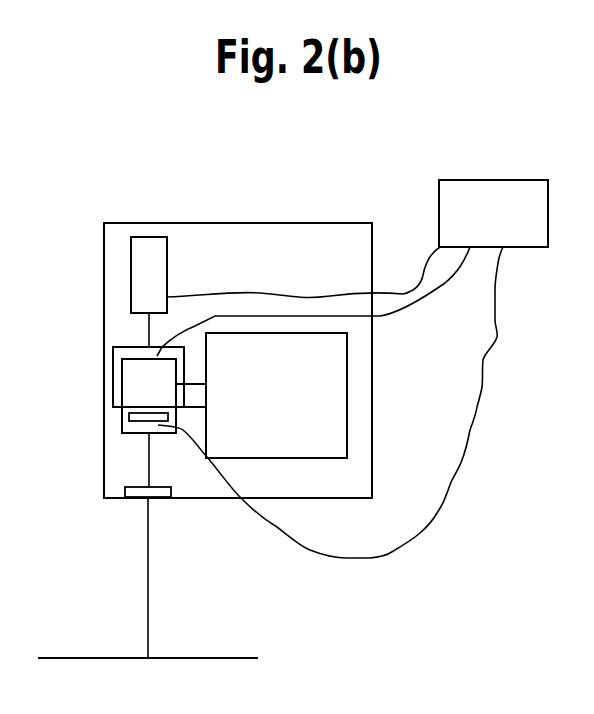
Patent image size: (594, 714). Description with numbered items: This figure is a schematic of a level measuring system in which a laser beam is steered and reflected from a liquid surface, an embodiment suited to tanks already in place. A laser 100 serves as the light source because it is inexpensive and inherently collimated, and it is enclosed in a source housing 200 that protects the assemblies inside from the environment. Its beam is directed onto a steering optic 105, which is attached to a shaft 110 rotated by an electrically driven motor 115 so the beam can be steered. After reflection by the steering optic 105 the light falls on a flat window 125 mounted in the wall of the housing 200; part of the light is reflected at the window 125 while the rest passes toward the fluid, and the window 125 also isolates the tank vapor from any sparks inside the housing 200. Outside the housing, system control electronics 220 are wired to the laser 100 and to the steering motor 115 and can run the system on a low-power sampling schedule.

The laser 100 is at (172, 269).
The steering optic 105 is at (121, 418).
The shaft 110 is at (192, 413).
The motor 115 is at (293, 473).
The window 125 is at (130, 502).
The source housing 200 is at (300, 222).
The system control electronics 220 is at (495, 178).